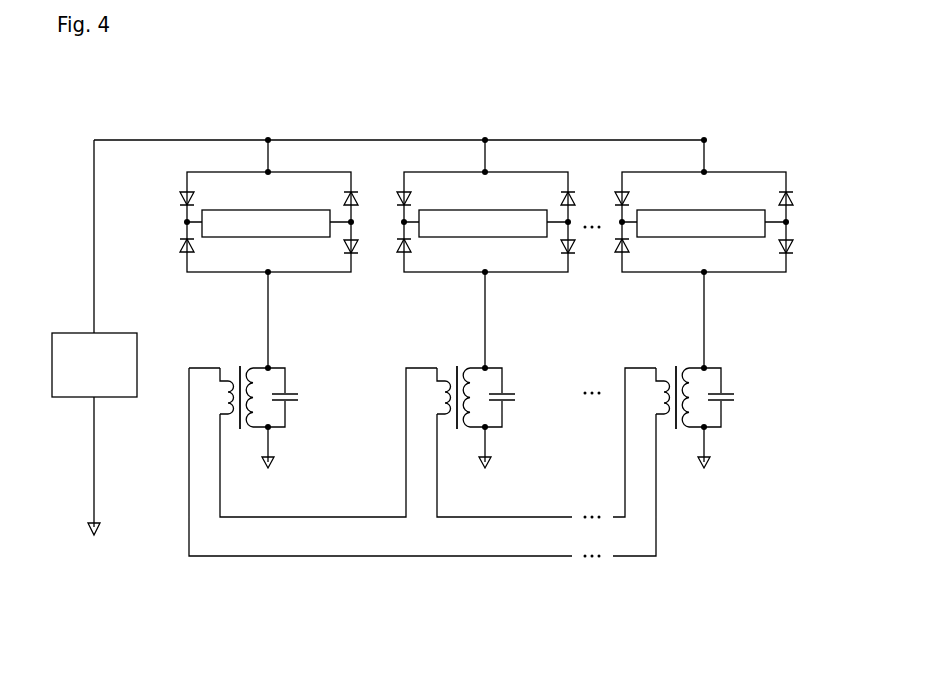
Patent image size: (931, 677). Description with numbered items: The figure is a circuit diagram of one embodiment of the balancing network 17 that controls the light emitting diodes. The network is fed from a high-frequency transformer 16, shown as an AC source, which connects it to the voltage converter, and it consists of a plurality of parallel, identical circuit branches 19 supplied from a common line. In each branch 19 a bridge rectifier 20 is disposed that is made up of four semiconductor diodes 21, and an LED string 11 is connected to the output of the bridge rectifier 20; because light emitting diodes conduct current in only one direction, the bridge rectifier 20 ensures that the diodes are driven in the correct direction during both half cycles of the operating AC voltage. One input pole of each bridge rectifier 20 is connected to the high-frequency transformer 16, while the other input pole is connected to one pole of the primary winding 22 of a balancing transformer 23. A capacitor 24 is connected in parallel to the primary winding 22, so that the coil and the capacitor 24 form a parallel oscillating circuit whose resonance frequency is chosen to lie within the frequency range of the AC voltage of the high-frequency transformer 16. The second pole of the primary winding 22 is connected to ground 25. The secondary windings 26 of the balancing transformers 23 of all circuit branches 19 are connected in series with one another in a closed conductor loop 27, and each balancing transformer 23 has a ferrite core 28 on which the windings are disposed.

The LED string 11 is at (244, 210).
The high-frequency transformer 16 is at (82, 340).
The balancing network 17 is at (757, 112).
The circuit branch 19 is at (260, 138).
The bridge rectifier 20 is at (171, 183).
The semiconductor diode 21 is at (181, 248).
The primary winding 22 is at (262, 368).
The balancing transformer 23 is at (240, 431).
The capacitor 24 is at (299, 399).
The ground 25 is at (272, 461).
The secondary winding 26 is at (226, 392).
The closed conductor loop 27 is at (415, 557).
The ferrite core 28 is at (237, 367).